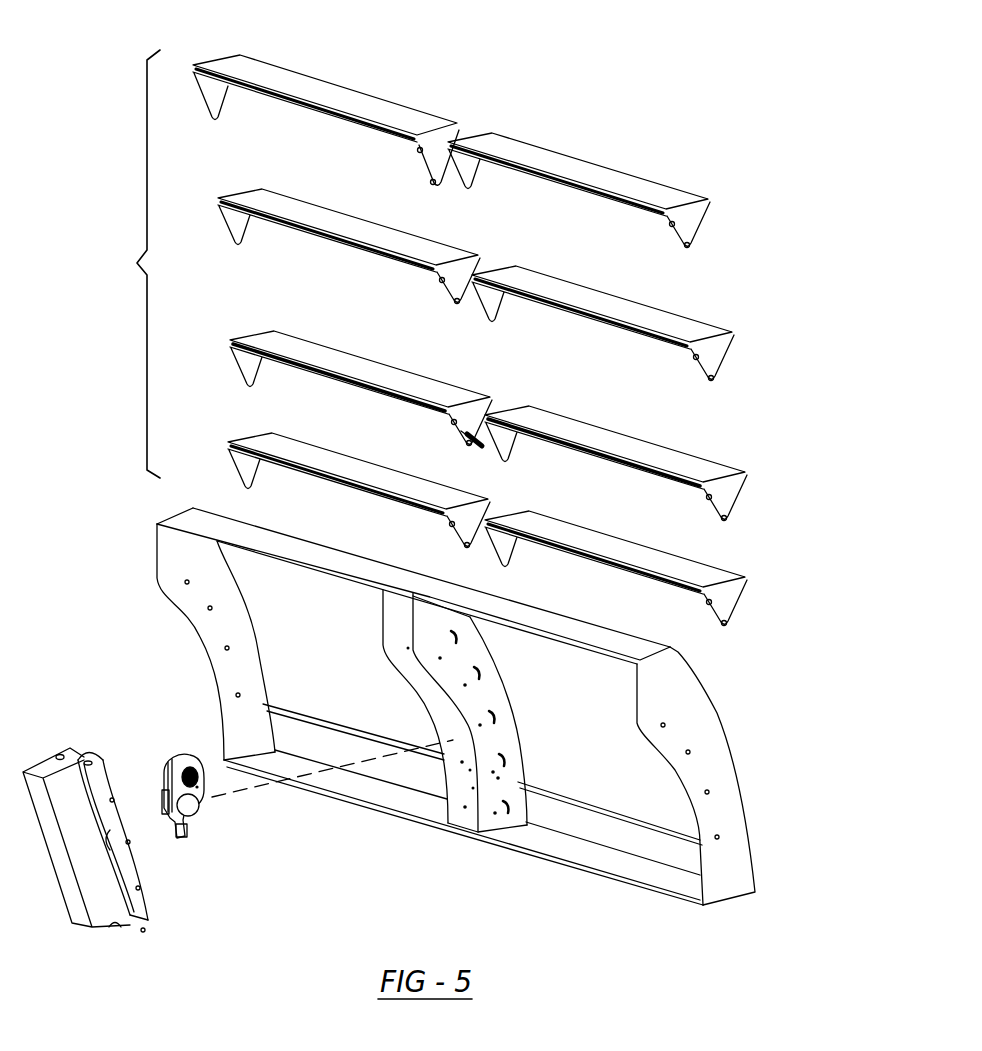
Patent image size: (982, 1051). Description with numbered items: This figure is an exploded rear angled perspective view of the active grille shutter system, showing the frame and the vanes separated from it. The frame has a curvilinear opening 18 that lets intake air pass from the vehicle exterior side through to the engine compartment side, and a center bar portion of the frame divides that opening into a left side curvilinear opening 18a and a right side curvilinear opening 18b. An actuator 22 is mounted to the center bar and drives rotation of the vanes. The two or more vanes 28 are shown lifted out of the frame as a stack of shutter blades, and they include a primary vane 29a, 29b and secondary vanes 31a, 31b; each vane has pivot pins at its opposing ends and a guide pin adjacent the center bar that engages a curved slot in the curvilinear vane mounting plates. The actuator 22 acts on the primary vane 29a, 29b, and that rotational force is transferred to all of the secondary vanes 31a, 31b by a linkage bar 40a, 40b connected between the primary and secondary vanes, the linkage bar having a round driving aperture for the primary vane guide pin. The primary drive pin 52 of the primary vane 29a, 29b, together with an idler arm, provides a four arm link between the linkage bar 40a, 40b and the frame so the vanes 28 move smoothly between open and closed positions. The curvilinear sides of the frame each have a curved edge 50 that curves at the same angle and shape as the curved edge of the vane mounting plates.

The curvilinear opening 18 is at (571, 609).
The left side curvilinear opening 18a is at (633, 763).
The right side curvilinear opening 18b is at (354, 649).
The actuator 22 is at (193, 807).
The two or more vanes 28 is at (133, 264).
The primary vane 29a is at (680, 463).
The primary vane 29b is at (378, 373).
The secondary vane 31a is at (565, 165).
The secondary vane 31b is at (285, 77).
The linkage bar 40a is at (100, 774).
The linkage bar 40b is at (60, 753).
The curved edge 50 is at (507, 688).
The primary drive pin 52 is at (477, 445).